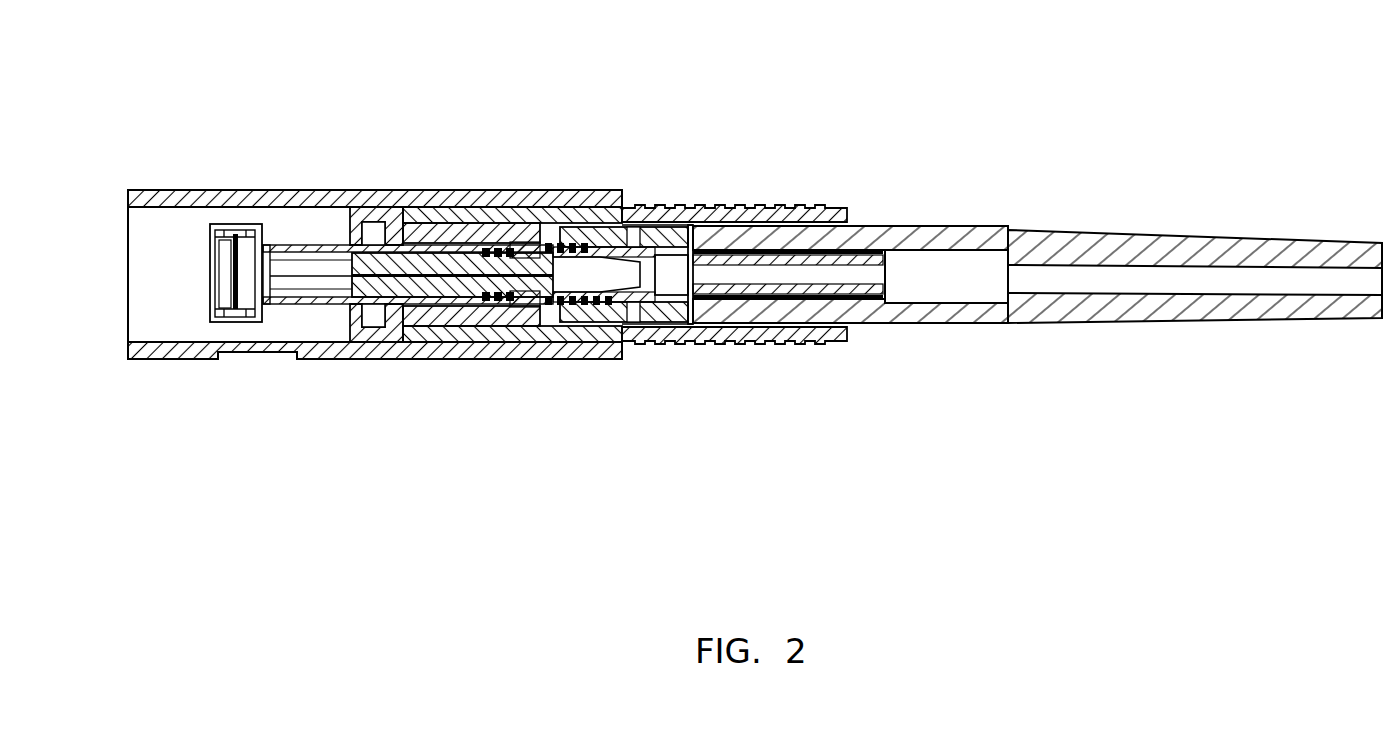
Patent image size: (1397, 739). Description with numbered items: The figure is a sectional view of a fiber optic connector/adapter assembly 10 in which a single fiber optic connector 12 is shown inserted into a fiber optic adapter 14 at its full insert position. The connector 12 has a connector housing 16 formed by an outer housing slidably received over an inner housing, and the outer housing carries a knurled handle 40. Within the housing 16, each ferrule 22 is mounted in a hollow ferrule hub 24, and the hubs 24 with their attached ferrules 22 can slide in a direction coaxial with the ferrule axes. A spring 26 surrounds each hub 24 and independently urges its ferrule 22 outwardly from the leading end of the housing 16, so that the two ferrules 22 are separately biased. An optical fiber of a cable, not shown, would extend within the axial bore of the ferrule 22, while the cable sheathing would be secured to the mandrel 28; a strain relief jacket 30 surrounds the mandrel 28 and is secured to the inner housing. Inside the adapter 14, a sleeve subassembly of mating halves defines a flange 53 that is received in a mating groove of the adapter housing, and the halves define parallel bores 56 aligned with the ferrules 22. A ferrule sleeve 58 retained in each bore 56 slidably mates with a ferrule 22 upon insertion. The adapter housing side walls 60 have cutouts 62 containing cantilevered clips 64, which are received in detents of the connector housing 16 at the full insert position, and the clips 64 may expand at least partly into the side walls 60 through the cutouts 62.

The fiber optic connector/adapter assembly 10 is at (976, 160).
The fiber optic connector 12 is at (1112, 222).
The fiber optic adapter 14 is at (173, 186).
The connector housing 16 is at (802, 205).
The ferrule 22 is at (505, 285).
The ferrule hub 24 is at (623, 291).
The spring 26 is at (557, 292).
The mandrel 28 is at (824, 257).
The strain relief jacket 30 is at (1263, 248).
The knurled handle 40 is at (750, 208).
The flange 53 is at (366, 308).
The bore 56 is at (262, 263).
The ferrule sleeve 58 is at (296, 300).
The adapter housing side wall 60 is at (148, 310).
The cutout 62 is at (223, 320).
The cantilevered clip 64 is at (224, 265).